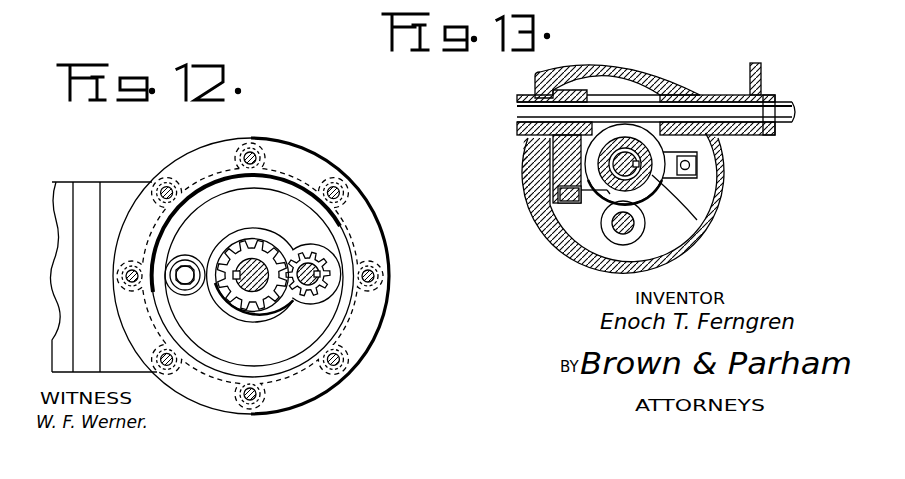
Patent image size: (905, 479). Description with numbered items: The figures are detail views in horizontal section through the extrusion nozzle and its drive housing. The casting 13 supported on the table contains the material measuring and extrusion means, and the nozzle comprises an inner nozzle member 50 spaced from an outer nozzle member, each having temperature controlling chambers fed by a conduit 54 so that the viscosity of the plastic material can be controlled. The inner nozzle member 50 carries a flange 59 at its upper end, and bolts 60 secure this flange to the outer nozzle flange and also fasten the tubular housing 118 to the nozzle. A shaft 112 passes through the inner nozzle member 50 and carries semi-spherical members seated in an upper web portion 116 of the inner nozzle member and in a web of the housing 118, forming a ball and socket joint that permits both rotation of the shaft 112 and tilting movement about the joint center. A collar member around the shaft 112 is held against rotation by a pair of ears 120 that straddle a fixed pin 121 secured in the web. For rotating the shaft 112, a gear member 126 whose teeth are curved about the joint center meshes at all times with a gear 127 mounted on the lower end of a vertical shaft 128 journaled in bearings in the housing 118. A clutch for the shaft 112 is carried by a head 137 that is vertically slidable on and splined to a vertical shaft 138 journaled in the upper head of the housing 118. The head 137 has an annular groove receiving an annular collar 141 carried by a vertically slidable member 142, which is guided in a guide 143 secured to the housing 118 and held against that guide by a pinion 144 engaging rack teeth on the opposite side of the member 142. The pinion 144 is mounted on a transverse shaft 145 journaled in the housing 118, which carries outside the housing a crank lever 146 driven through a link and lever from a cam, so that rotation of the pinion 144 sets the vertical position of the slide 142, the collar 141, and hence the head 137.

In FIG. 12, the casting 13 is at (62, 203).
In FIG. 12, the inner nozzle member 50 is at (372, 240).
In FIG. 12, the conduit 54 is at (182, 279).
In FIG. 12, the flange 59 is at (370, 326).
In FIG. 12, the bolts 60 is at (334, 190).
In FIG. 12, the shaft 112 is at (240, 231).
In FIG. 12, the upper web portion 116 is at (307, 220).
In FIG. 13, the tubular housing 118 is at (675, 243).
In FIG. 13, the ears 120 is at (693, 152).
In FIG. 13, the fixed pin 121 is at (697, 164).
In FIG. 12, the gear member 126 is at (247, 298).
In FIG. 12, the gear 127 is at (312, 300).
In FIG. 12, the vertical shaft 128 is at (322, 268).
In FIG. 13, the vertical shaft 128 is at (617, 228).
In FIG. 13, the head 137 is at (697, 220).
In FIG. 13, the vertical shaft 138 is at (545, 158).
In FIG. 13, the annular collar 141 is at (607, 190).
In FIG. 13, the vertically slidable member 142 is at (565, 160).
In FIG. 13, the guide 143 is at (565, 185).
In FIG. 13, the pinion 144 is at (570, 90).
In FIG. 13, the transverse shaft 145 is at (627, 112).
In FIG. 13, the crank lever 146 is at (757, 73).